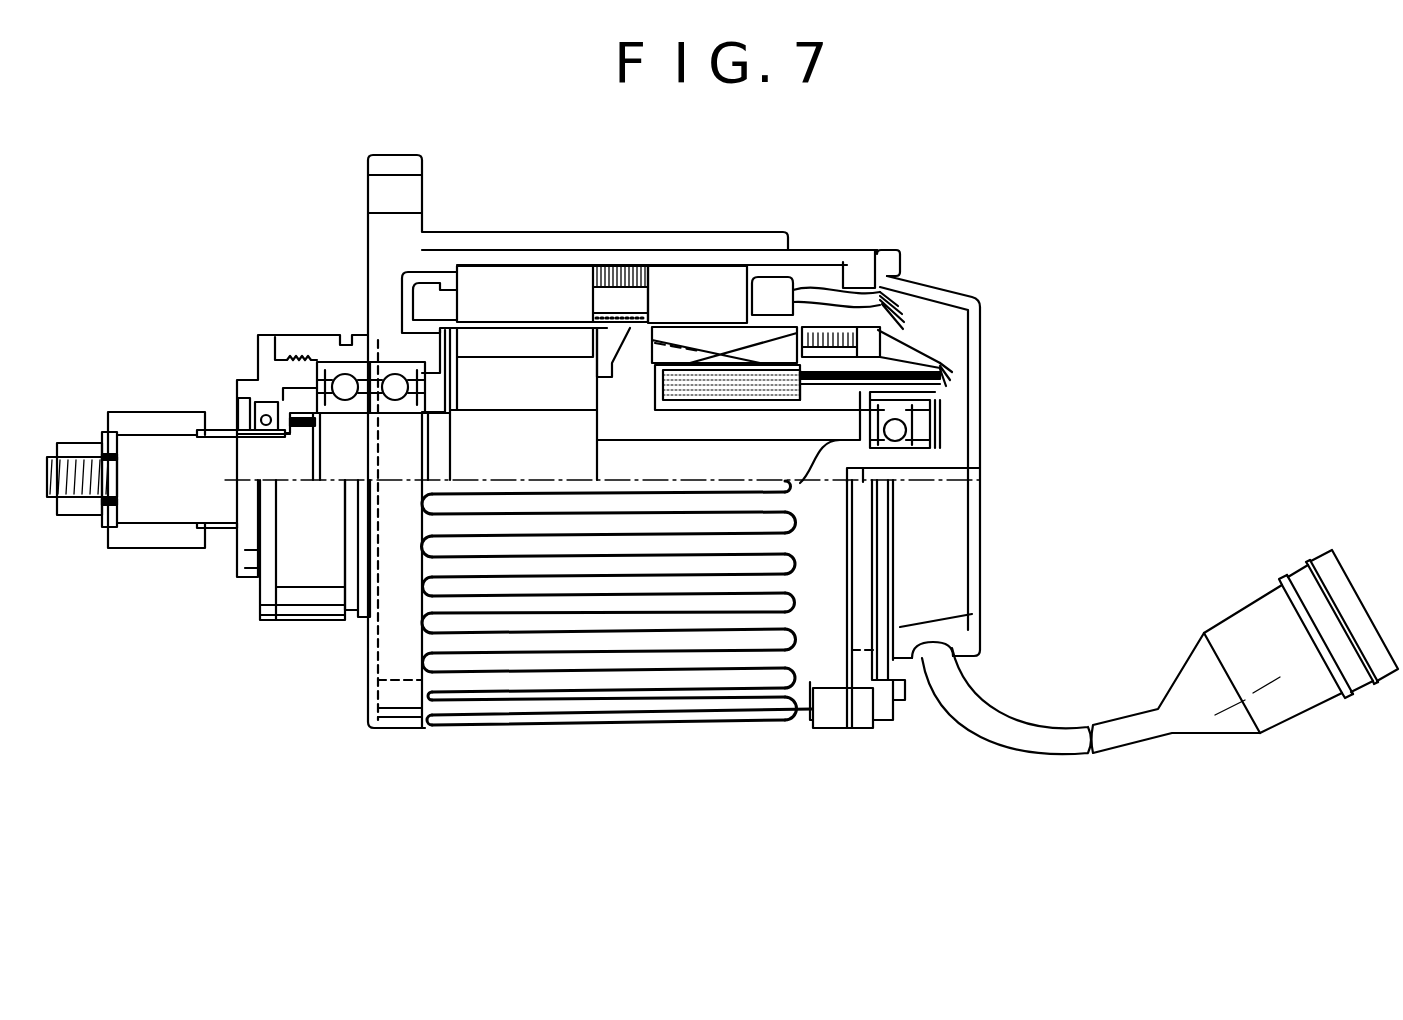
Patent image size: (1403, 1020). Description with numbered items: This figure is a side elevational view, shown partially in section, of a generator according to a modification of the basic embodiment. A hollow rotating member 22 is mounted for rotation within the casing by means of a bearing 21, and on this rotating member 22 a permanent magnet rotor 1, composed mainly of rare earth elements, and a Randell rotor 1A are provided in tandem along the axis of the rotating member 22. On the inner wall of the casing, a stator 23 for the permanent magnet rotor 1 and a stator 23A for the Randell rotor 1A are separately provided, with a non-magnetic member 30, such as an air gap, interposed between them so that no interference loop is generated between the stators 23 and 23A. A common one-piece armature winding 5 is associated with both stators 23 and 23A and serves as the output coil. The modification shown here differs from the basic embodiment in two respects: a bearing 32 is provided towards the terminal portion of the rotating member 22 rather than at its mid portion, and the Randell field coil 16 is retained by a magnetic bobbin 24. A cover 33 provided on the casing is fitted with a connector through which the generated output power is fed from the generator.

The permanent magnet rotor 1 is at (557, 343).
The Randell rotor 1A is at (753, 348).
The armature winding 5 is at (437, 280).
The Randell field coil 16 is at (748, 403).
The bearing 21 is at (363, 368).
The hollow rotating member 22 is at (337, 470).
The stator 23 is at (508, 277).
The stator 23A is at (723, 277).
The magnetic bobbin 24 is at (817, 355).
The non-magnetic member 30 is at (630, 267).
The bearing 32 is at (880, 435).
The cover 33 is at (918, 600).